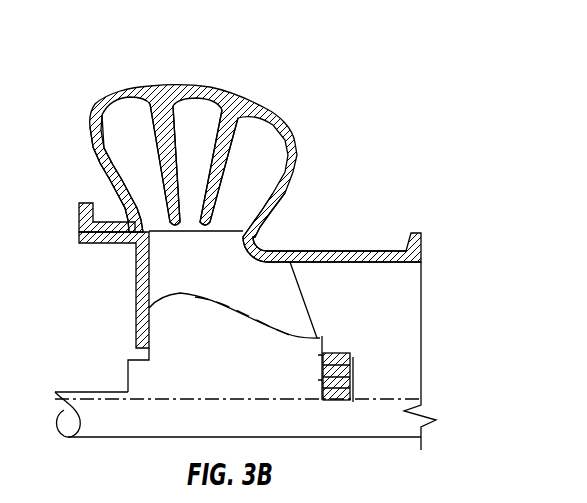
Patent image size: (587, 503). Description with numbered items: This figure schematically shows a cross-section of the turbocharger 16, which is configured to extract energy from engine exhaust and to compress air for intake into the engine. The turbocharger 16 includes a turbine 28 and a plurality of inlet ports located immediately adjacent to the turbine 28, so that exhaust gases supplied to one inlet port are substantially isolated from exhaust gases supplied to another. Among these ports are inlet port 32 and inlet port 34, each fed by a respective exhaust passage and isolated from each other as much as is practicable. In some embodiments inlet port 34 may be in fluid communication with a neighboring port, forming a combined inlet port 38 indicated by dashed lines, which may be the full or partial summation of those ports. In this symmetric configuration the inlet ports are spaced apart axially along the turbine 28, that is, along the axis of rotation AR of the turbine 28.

The turbocharger 16 is at (108, 55).
The inlet port 34 is at (189, 193).
The inlet port 32 is at (150, 206).
The inlet port 38 is at (230, 212).
The turbine 28 is at (213, 280).
The axis of rotation AR is at (395, 402).